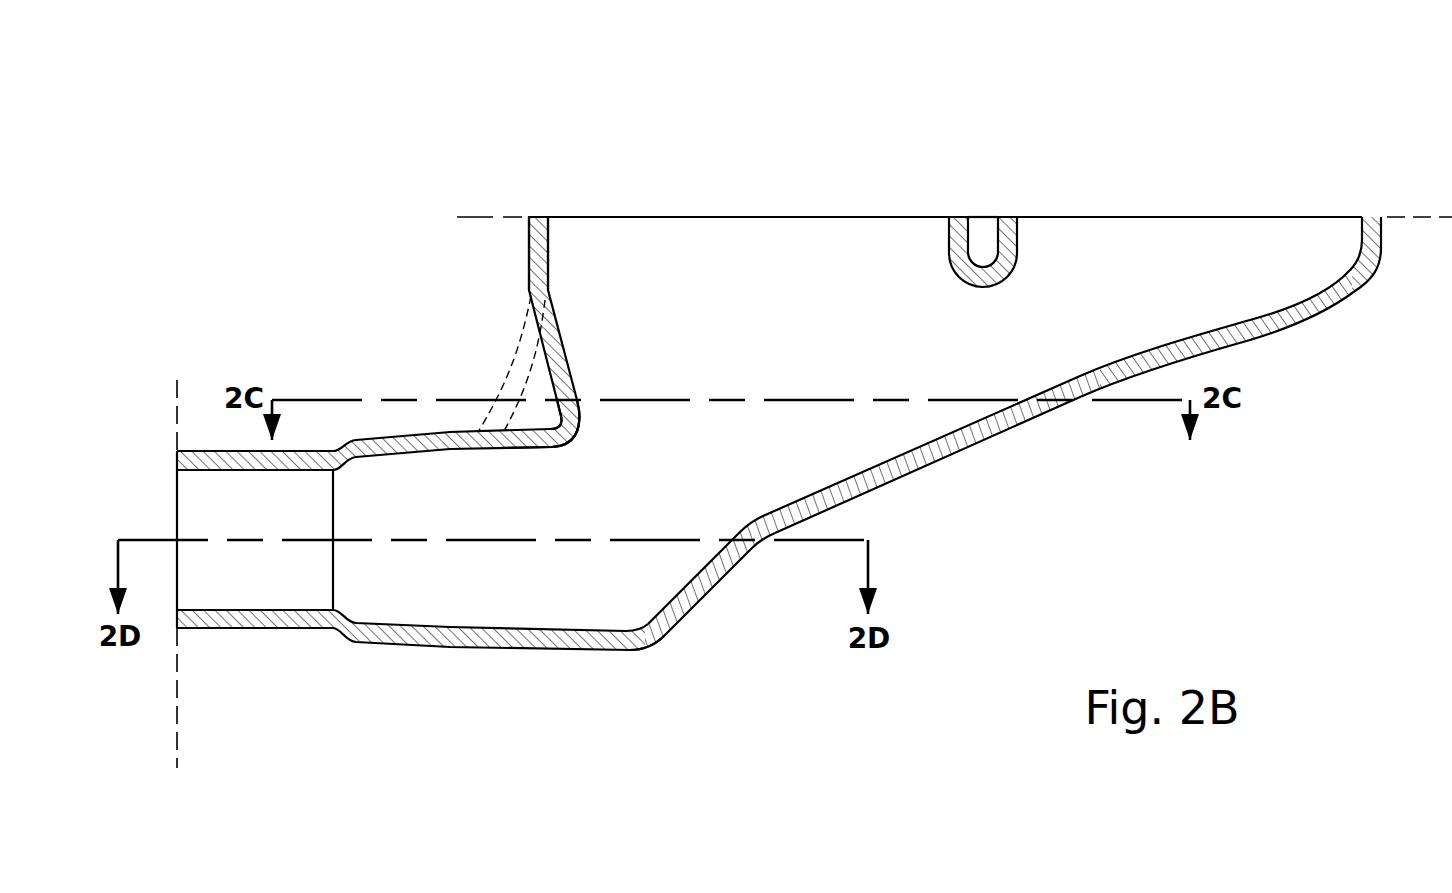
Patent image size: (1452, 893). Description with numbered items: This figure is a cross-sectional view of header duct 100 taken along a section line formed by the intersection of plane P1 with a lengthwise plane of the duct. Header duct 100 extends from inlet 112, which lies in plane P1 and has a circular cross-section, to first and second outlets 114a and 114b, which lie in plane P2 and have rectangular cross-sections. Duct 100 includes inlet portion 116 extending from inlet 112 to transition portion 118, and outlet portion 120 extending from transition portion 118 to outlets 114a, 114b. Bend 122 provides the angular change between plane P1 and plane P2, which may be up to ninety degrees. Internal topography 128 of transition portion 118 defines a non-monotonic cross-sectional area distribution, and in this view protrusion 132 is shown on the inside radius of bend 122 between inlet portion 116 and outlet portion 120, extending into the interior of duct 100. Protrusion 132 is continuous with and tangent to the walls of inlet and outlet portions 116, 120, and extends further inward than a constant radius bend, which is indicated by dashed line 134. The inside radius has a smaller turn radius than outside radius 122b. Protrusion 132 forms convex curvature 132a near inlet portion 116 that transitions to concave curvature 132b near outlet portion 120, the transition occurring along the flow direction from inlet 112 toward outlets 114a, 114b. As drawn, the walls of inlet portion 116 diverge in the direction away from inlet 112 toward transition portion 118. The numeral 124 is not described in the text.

The header duct 100 is at (766, 401).
The inlet 112 is at (176, 487).
The first outlet 114a is at (795, 197).
The second outlet 114b is at (1170, 197).
The inlet portion 116 is at (779, 507).
The transition portion 118 is at (708, 689).
The outlet portion 120 is at (978, 92).
The bend 122 is at (470, 392).
The outside radius 122b is at (734, 623).
The central axis 124 is at (177, 535).
The internal topography 128 is at (578, 435).
The protrusion 132 is at (588, 418).
The convex curvature 132a is at (568, 433).
The concave curvature 132b is at (548, 288).
The constant radius bend 134 is at (513, 380).
The plane P1 is at (176, 754).
The plane P2 is at (1440, 217).